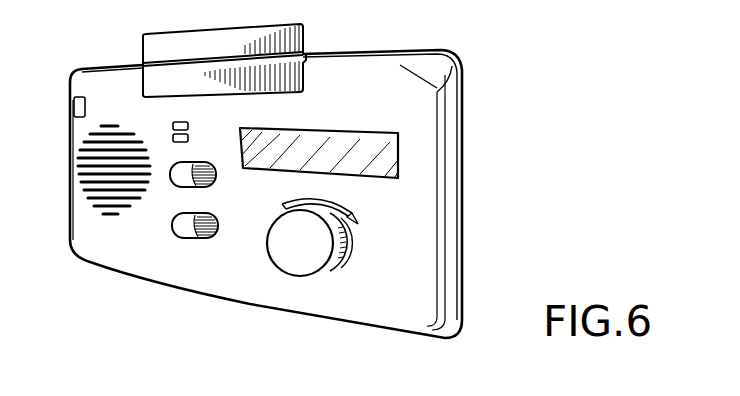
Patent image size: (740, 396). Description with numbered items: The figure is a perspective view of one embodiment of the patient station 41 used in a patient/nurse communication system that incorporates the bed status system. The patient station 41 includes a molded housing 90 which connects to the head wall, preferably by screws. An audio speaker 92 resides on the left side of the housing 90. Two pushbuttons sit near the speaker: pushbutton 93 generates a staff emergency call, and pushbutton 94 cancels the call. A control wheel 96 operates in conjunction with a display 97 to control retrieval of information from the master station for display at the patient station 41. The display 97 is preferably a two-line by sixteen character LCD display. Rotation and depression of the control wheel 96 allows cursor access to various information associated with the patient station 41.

The patient station 41 is at (112, 293).
The molded housing 90 is at (388, 314).
The audio speaker 92 is at (88, 199).
The pushbutton 93 is at (190, 186).
The pushbutton 94 is at (186, 239).
The control wheel 96 is at (296, 264).
The display 97 is at (325, 132).